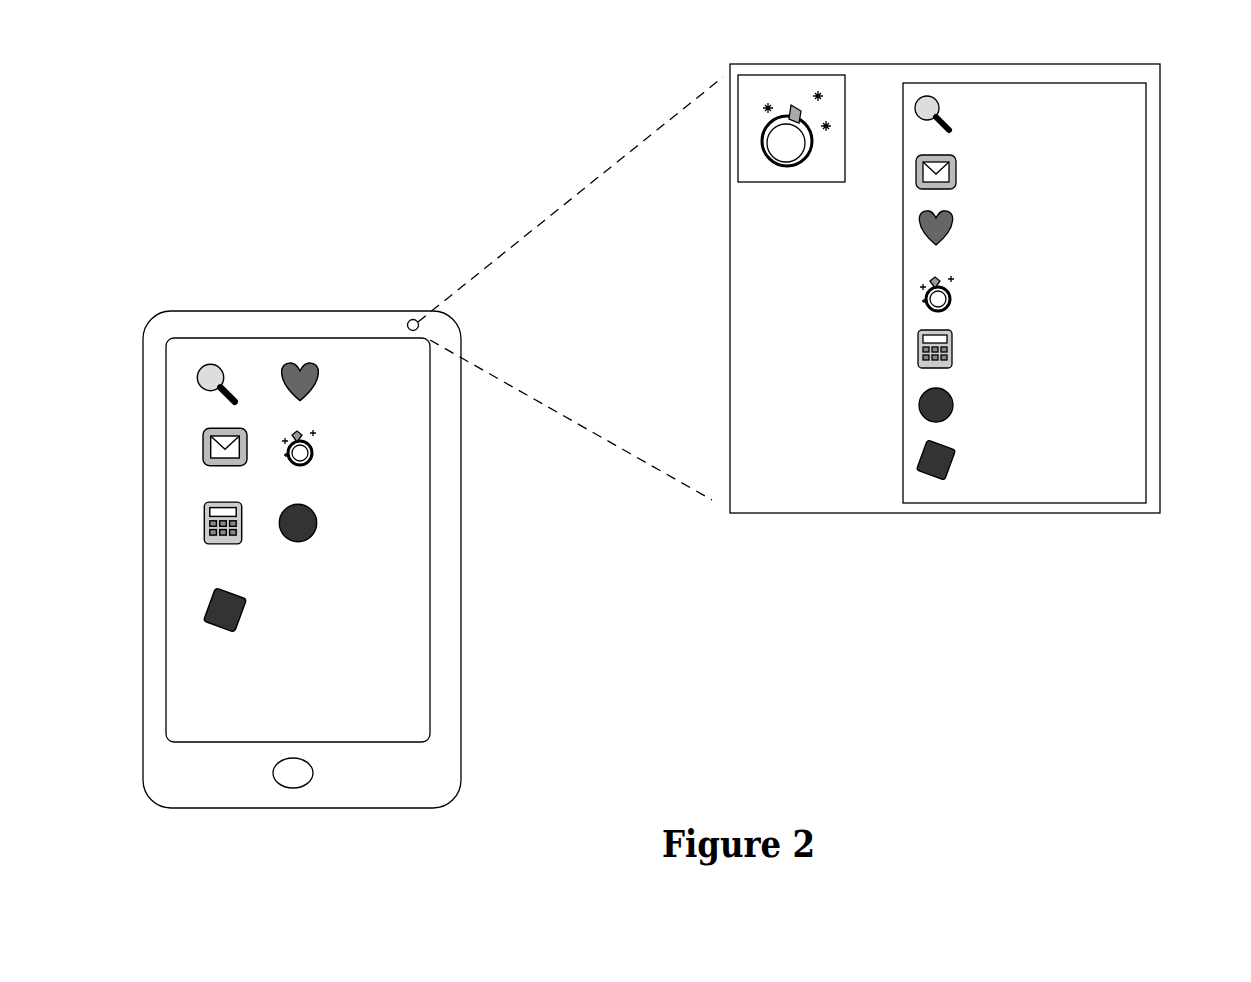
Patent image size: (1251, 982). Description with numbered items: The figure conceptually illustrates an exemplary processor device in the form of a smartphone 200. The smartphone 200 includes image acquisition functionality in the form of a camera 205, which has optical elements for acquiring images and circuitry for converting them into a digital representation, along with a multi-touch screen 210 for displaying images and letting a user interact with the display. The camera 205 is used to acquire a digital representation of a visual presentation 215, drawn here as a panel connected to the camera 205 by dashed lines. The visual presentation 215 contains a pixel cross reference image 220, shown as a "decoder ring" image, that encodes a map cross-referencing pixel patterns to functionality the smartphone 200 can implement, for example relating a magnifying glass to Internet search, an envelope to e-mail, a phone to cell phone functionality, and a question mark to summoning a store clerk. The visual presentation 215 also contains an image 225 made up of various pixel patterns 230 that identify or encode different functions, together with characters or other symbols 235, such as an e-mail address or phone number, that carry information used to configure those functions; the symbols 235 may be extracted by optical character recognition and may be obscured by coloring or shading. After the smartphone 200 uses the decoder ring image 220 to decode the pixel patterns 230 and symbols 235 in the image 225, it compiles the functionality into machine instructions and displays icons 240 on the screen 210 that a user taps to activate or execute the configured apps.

The smartphone 200 is at (198, 311).
The camera 205 is at (412, 318).
The multi-touch screen 210 is at (348, 540).
The visual presentation 215 is at (797, 513).
The pixel cross reference image 220 is at (760, 182).
The image 225 is at (1026, 293).
The pixel patterns 230 is at (900, 349).
The symbols 235 is at (1097, 379).
The icons 240 is at (306, 561).